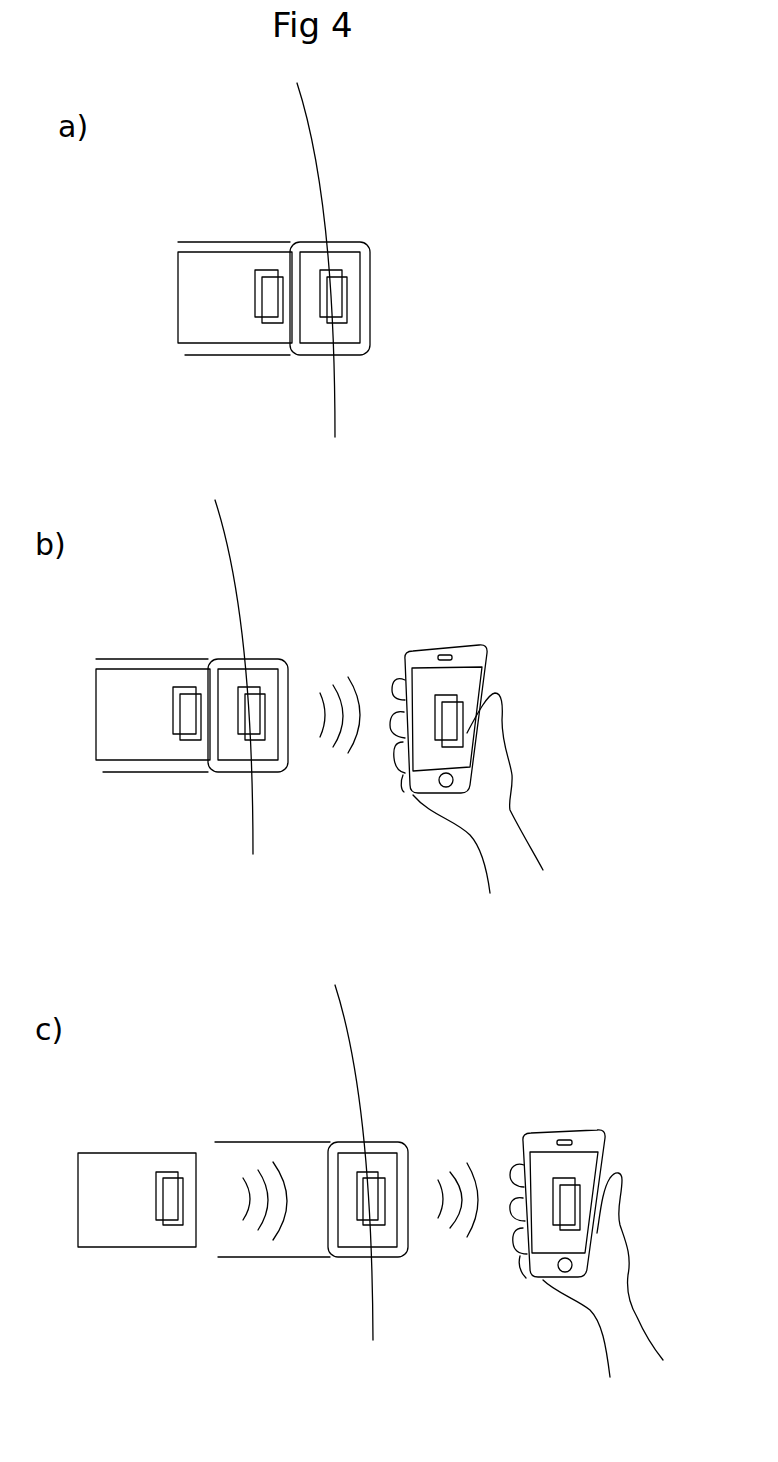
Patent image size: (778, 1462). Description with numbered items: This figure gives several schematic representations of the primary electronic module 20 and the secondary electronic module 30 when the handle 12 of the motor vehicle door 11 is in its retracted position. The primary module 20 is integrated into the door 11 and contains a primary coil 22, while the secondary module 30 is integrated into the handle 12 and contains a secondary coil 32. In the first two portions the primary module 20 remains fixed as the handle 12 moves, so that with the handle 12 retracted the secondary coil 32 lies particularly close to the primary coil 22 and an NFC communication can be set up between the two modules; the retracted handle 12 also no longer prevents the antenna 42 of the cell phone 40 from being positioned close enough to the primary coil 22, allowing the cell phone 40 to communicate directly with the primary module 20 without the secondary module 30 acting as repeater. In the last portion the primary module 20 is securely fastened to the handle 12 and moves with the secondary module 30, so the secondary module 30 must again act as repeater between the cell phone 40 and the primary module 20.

The motor vehicle door 11 is at (323, 160).
The handle 12 is at (348, 355).
The primary electronic module 20 is at (238, 252).
The primary coil 22 is at (270, 323).
The secondary electronic module 30 is at (342, 253).
The secondary coil 32 is at (345, 277).
The cell phone 40 is at (445, 643).
The antenna 42 is at (460, 702).